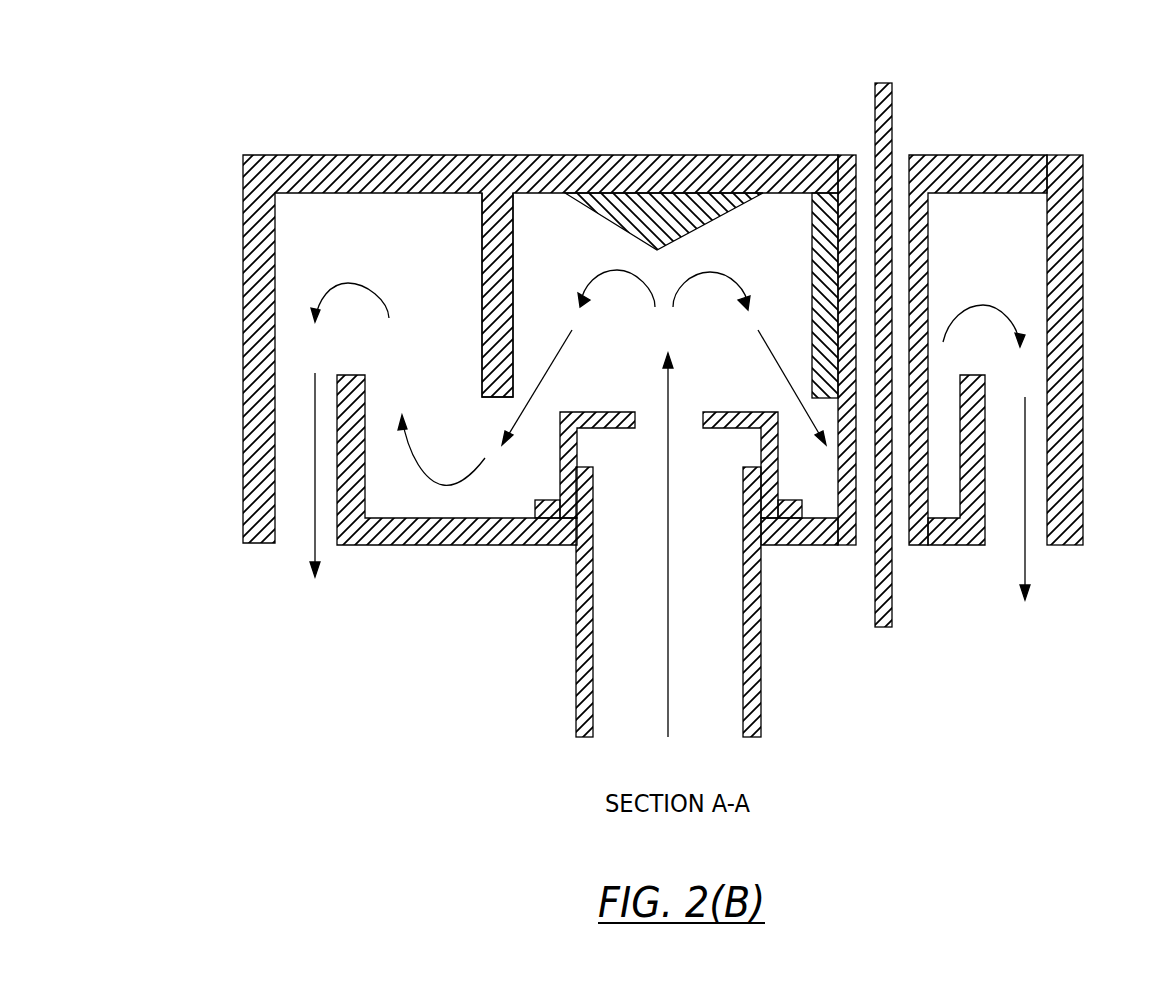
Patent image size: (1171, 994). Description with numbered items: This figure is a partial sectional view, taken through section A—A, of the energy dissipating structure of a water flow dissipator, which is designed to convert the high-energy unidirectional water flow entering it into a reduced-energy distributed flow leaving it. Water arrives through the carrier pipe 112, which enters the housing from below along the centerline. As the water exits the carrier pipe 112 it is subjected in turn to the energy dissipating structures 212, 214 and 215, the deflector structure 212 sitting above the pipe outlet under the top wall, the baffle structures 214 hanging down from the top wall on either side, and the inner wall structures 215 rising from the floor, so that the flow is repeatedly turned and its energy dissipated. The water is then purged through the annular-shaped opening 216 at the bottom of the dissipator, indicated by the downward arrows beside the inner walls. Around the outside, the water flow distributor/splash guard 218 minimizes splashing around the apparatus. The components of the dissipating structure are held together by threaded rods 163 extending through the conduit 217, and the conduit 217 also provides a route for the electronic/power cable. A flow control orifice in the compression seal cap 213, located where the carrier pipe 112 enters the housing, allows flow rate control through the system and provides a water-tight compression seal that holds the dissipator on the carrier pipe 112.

The carrier pipe 112 is at (762, 620).
The threaded rod 163 is at (885, 82).
The energy dissipating structure 212 is at (638, 215).
The compression seal cap 213 is at (565, 457).
The energy dissipating structure 214 is at (480, 252).
The energy dissipating structure 215 is at (343, 450).
The annular-shaped opening 216 is at (290, 528).
The conduit 217 is at (838, 155).
The water flow distributor/splash guard 218 is at (1083, 277).